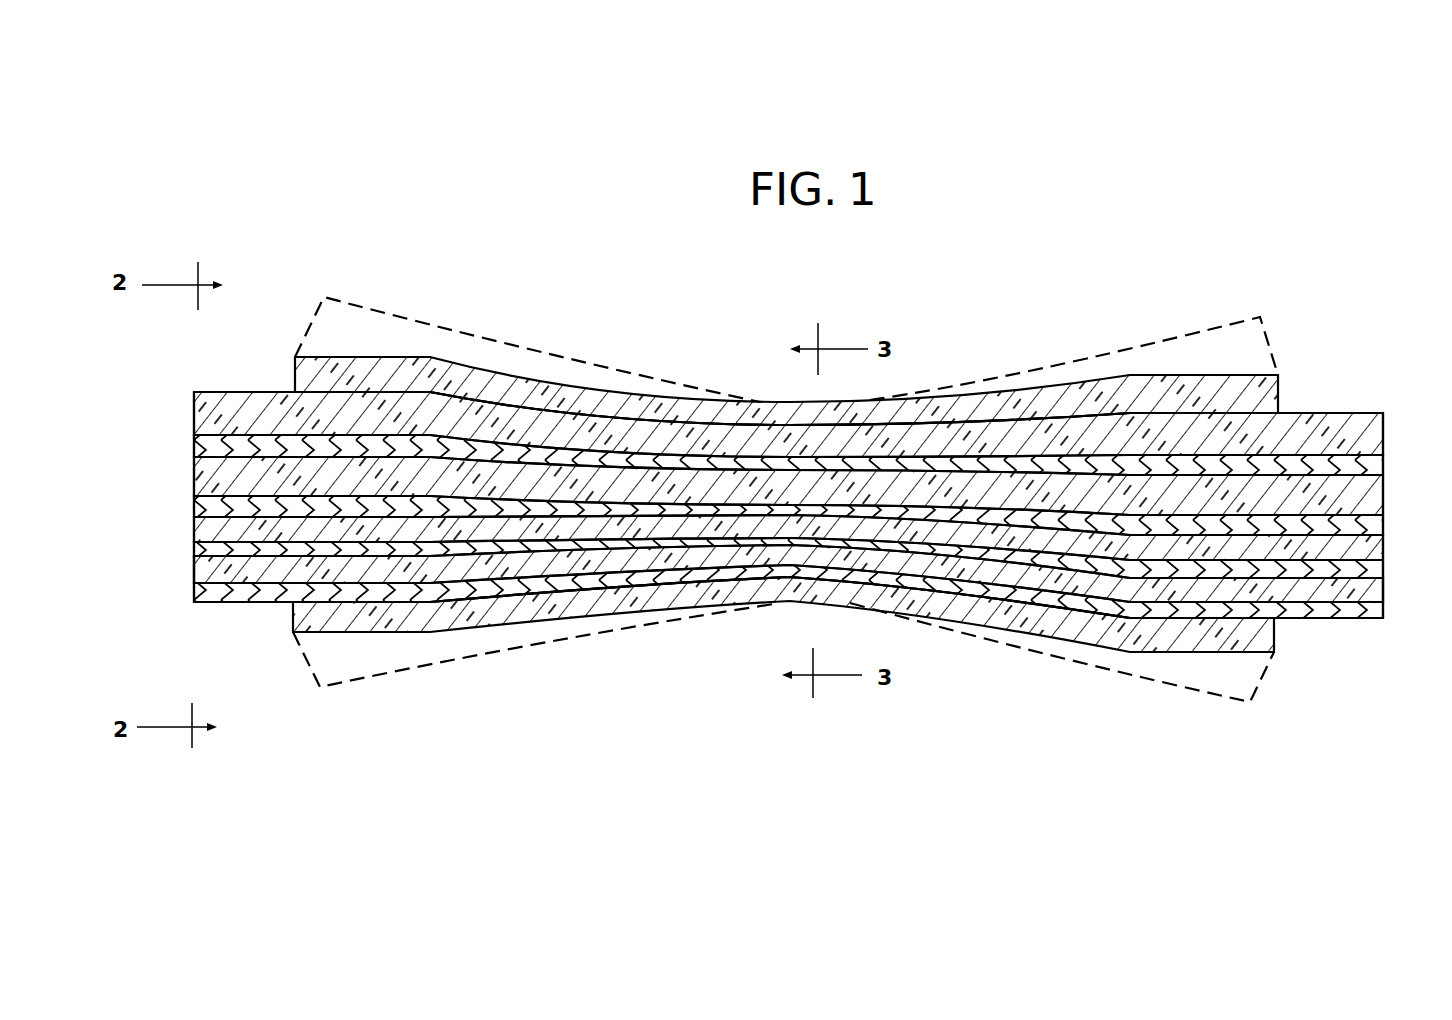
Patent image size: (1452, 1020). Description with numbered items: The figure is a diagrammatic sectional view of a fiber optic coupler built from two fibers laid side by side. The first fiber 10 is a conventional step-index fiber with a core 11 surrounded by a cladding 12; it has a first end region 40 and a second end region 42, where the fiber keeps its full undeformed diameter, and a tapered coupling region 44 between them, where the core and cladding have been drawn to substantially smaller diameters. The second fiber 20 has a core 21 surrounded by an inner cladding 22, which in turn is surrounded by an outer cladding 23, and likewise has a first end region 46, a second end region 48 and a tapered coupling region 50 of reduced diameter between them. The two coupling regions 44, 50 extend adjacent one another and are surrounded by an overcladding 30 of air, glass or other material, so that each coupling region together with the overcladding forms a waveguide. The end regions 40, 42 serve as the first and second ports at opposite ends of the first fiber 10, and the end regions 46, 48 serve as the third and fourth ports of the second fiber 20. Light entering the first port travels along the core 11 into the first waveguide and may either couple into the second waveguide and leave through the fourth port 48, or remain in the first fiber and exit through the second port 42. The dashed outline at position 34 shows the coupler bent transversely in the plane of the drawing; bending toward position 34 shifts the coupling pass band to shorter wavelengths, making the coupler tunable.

The first fiber 10 is at (199, 386).
The core 11 is at (217, 446).
The cladding 12 is at (236, 407).
The second fiber 20 is at (275, 612).
The core 21 is at (200, 534).
The inner cladding 22 is at (238, 574).
The outer cladding 23 is at (214, 596).
The overcladding 30 is at (489, 377).
The position 34 is at (388, 294).
The first end region 40 is at (190, 416).
The second end region 42 is at (1390, 428).
The tapered coupling region 44 is at (747, 418).
The first end region 46 is at (190, 566).
The second end region 48 is at (1390, 592).
The tapered coupling region 50 is at (753, 584).